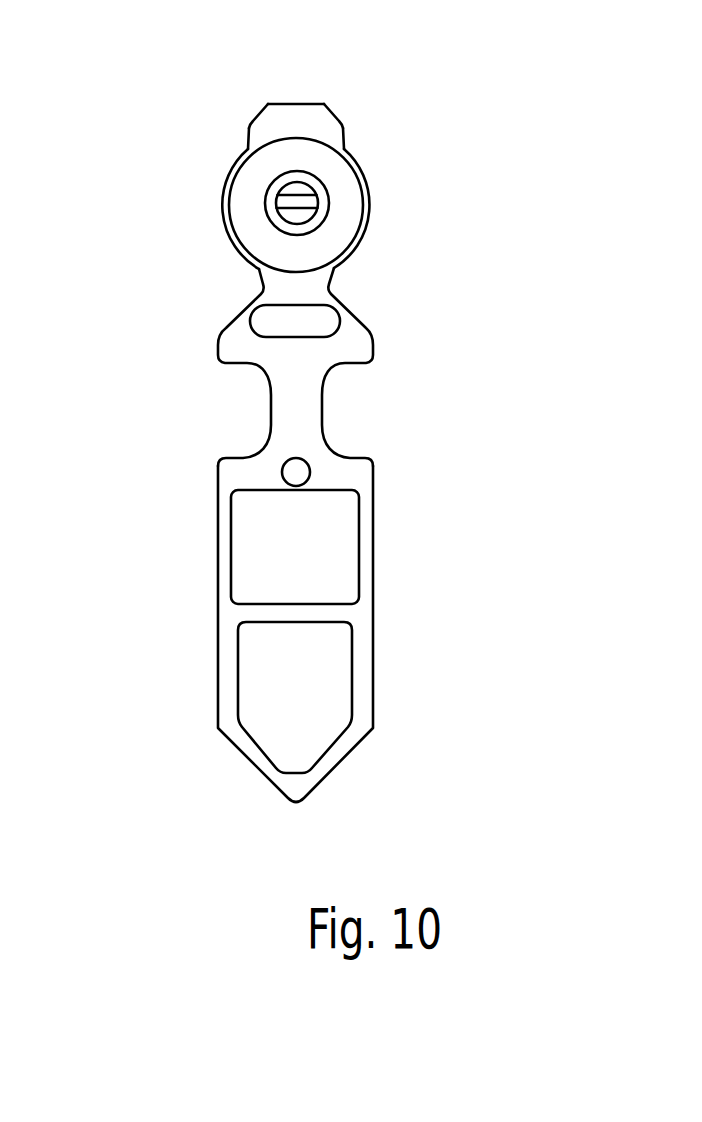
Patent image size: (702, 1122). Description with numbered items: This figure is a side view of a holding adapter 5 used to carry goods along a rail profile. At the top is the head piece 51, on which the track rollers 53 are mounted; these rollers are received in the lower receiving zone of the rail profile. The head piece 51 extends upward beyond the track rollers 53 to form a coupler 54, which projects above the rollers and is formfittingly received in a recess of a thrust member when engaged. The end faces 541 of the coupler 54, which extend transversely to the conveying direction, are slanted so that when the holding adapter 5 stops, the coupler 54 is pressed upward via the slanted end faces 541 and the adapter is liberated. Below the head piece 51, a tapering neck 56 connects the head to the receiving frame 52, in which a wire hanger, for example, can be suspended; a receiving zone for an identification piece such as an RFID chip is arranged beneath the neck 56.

The holding adapter 5 is at (208, 788).
The head piece 51 is at (258, 262).
The receiving frame 52 is at (357, 708).
The track rollers 53 is at (333, 200).
The coupler 54 is at (293, 110).
The end faces 541 is at (255, 117).
The tapering neck 56 is at (320, 417).